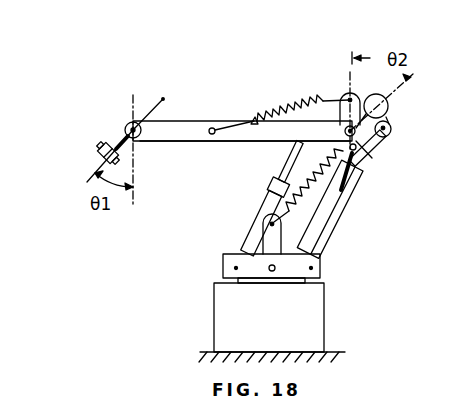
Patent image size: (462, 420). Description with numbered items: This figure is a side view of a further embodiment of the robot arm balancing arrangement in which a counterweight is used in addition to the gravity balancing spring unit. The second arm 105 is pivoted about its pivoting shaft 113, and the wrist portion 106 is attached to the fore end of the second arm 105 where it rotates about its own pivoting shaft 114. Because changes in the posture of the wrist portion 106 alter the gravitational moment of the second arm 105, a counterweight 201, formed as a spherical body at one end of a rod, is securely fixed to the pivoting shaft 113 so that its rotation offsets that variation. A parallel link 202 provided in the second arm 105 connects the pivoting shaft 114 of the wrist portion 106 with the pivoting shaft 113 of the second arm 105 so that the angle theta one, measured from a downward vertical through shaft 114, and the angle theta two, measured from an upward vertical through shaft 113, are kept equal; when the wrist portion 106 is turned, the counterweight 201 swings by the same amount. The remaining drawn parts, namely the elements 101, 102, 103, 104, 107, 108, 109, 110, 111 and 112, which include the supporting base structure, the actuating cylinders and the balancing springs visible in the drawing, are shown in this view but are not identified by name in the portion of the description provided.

The ground / floor 101 is at (212, 354).
The base 102 is at (305, 336).
The table / platform 103 is at (222, 268).
The piston 104 is at (316, 196).
The second arm 105 is at (176, 128).
The wrist portion 106 is at (114, 121).
The piston rod 107 is at (333, 214).
The cylinder 108 is at (266, 194).
The spring 109 is at (320, 168).
The spring 110 is at (273, 99).
The pivot 111 is at (350, 98).
The cylinder tube 112 is at (322, 245).
The pivoting shaft of the second arm 113 is at (362, 138).
The pivoting shaft of the wrist portion 114 is at (136, 139).
The counterweight 201 is at (387, 108).
The parallel link 202 is at (257, 143).